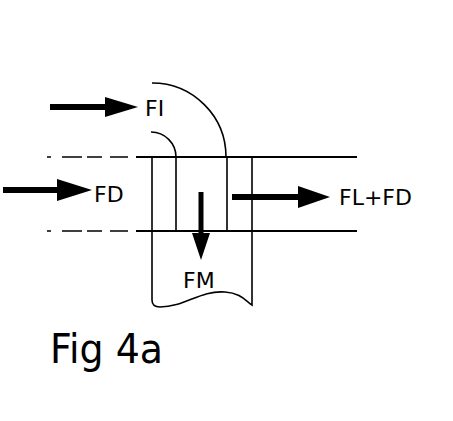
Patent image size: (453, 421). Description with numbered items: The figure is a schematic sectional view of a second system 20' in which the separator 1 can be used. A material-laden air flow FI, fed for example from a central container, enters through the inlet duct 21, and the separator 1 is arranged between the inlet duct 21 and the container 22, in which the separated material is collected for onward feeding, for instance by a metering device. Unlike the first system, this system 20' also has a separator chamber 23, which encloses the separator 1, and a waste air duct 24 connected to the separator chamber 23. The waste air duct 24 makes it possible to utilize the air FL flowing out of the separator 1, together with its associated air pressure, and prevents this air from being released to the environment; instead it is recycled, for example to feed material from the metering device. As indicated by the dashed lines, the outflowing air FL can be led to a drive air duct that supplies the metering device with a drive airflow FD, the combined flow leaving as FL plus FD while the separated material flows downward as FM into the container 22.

The system 20' is at (168, 118).
The inlet duct 21 is at (212, 112).
The waste air duct 24 is at (271, 157).
The separator chamber 23 is at (252, 221).
The container 22 is at (252, 272).
The separator 1 is at (176, 212).